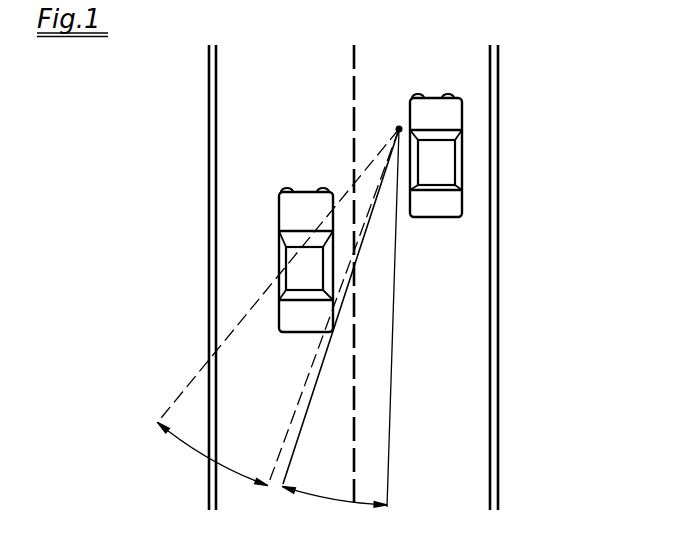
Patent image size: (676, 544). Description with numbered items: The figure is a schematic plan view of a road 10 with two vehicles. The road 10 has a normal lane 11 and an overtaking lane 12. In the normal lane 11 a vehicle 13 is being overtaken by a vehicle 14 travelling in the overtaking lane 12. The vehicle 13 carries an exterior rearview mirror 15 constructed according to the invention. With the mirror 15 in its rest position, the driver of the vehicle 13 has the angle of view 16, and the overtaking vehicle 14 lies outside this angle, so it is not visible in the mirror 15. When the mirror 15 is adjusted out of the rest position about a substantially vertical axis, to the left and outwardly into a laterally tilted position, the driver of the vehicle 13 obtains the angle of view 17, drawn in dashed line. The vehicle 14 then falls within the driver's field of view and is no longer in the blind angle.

The road 10 is at (490, 338).
The normal lane 11 is at (447, 253).
The overtaking lane 12 is at (237, 257).
The vehicle 13 is at (443, 155).
The vehicle 14 is at (291, 210).
The exterior rearview mirror 15 is at (399, 129).
The angle of view 16 is at (334, 488).
The angle of view 17 is at (213, 453).